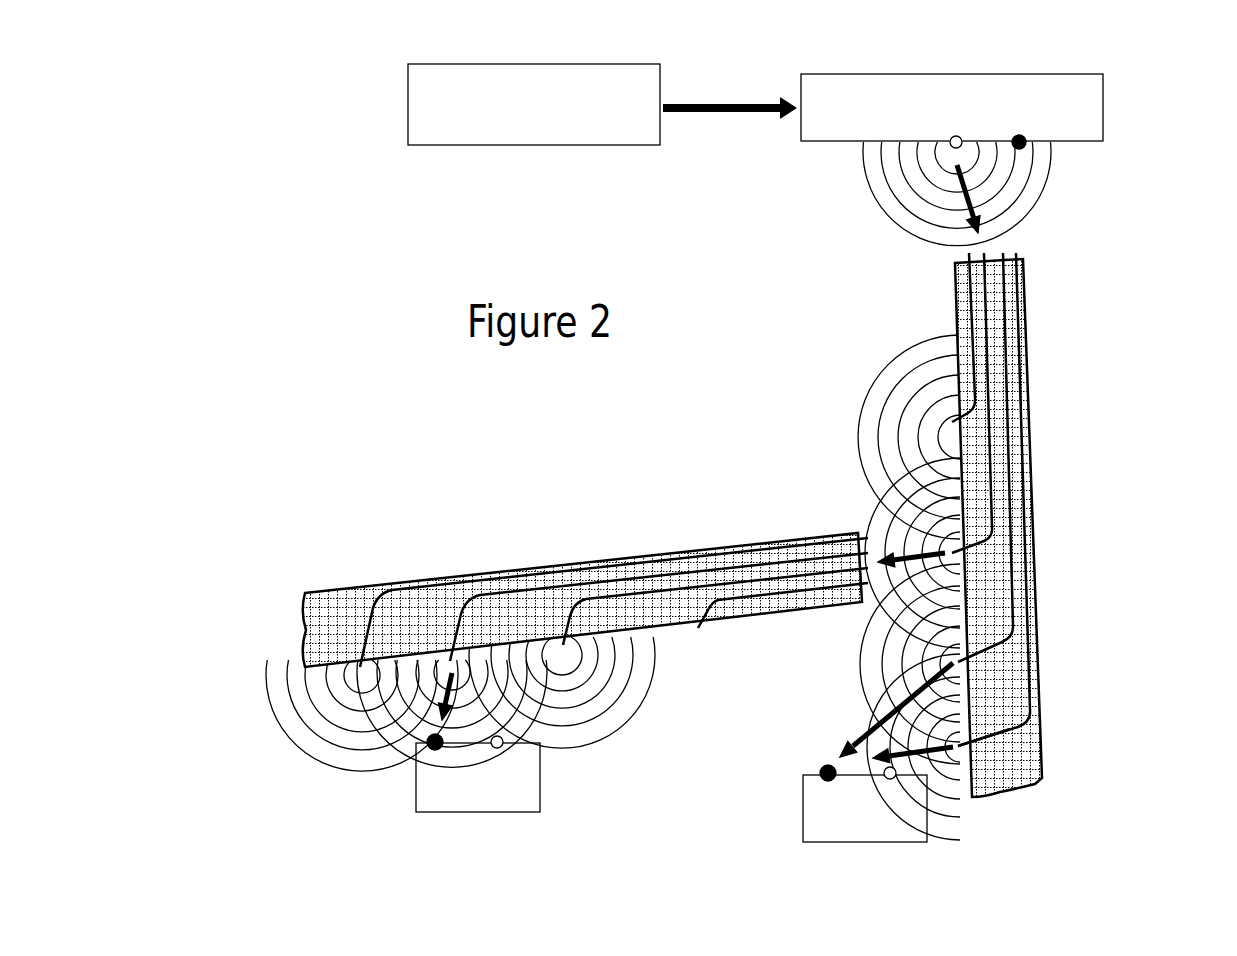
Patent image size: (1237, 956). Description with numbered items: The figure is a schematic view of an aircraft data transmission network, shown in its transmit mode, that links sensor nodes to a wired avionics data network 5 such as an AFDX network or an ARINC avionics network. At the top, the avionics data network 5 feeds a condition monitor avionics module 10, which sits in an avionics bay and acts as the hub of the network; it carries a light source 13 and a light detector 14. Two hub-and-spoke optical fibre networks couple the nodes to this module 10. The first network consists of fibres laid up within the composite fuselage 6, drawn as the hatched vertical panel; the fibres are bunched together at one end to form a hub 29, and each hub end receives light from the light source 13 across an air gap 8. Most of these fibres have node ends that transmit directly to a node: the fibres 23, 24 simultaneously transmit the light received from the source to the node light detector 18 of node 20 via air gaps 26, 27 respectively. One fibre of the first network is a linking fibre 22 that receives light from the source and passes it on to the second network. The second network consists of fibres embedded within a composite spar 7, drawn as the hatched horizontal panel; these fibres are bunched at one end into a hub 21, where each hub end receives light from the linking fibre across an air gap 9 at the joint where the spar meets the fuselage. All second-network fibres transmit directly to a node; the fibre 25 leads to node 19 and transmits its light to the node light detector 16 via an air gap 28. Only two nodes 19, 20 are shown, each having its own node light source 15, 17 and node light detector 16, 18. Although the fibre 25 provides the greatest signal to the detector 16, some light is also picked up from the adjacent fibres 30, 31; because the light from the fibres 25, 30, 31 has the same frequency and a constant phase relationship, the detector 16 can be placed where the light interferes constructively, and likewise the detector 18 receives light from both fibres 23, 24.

The avionics data network 5 is at (568, 138).
The fuselage 6 is at (1027, 750).
The spar 7 is at (585, 546).
The air gap 8 is at (955, 160).
The air gap 9 is at (903, 593).
The condition monitor avionics module 10 is at (830, 132).
The light source 13 is at (952, 146).
The light detector 14 is at (1022, 145).
The node light source 15 is at (503, 745).
The node light detector 16 is at (430, 745).
The node light source 17 is at (893, 775).
The node light detector 18 is at (826, 771).
The node 19 is at (417, 800).
The node 20 is at (803, 800).
The hub 21 is at (839, 510).
The linking fibre 22 is at (992, 447).
The optical fibre 23 is at (1013, 587).
The optical fibre 24 is at (1028, 655).
The optical fibre 25 is at (510, 593).
The air gap 26 is at (868, 725).
The air gap 27 is at (963, 760).
The air gap 28 is at (428, 735).
The hub 29 is at (1060, 528).
The optical fibre 30 is at (560, 568).
The optical fibre 31 is at (683, 588).